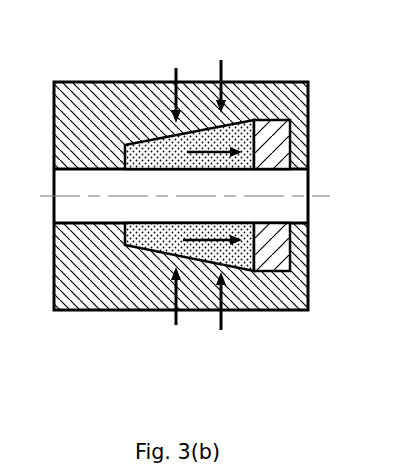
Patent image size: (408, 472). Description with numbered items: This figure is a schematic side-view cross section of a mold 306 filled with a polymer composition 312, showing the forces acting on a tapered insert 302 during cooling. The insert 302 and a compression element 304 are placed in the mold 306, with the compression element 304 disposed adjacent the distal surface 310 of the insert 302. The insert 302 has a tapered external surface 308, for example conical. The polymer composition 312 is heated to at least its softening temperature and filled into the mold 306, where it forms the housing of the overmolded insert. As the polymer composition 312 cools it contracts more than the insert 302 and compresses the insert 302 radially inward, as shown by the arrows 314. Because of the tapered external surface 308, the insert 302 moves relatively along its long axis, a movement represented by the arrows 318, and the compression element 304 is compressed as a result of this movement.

The insert 302 is at (153, 159).
The compression element 304 is at (283, 136).
The mold 306 is at (328, 196).
The tapered external surface 308 is at (238, 81).
The distal surface 310 is at (272, 272).
The polymer composition 312 is at (72, 298).
The arrows 314 is at (226, 58).
The arrows 318 is at (202, 158).